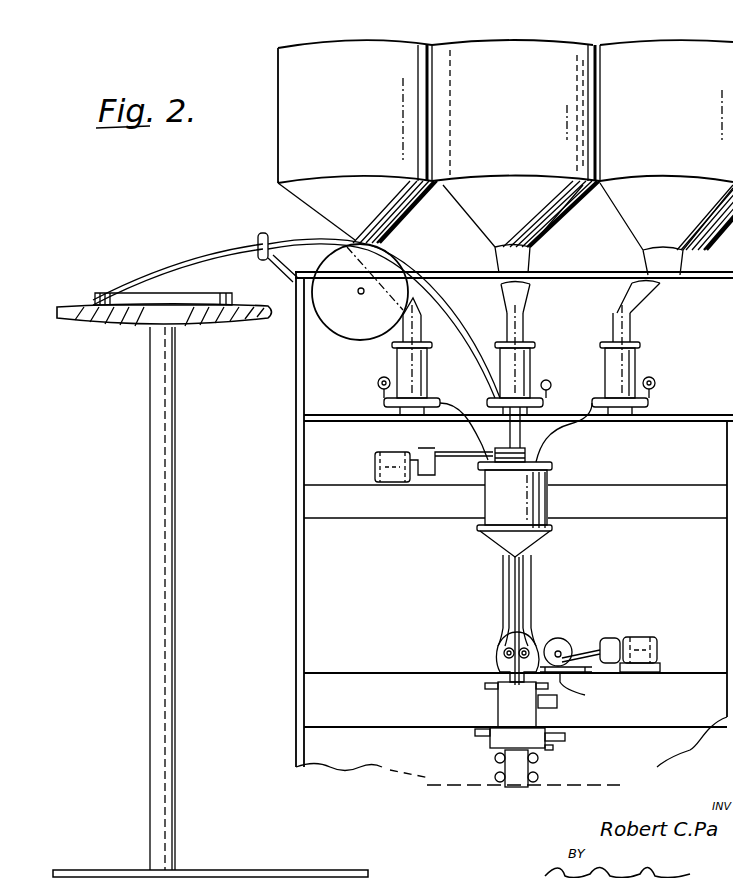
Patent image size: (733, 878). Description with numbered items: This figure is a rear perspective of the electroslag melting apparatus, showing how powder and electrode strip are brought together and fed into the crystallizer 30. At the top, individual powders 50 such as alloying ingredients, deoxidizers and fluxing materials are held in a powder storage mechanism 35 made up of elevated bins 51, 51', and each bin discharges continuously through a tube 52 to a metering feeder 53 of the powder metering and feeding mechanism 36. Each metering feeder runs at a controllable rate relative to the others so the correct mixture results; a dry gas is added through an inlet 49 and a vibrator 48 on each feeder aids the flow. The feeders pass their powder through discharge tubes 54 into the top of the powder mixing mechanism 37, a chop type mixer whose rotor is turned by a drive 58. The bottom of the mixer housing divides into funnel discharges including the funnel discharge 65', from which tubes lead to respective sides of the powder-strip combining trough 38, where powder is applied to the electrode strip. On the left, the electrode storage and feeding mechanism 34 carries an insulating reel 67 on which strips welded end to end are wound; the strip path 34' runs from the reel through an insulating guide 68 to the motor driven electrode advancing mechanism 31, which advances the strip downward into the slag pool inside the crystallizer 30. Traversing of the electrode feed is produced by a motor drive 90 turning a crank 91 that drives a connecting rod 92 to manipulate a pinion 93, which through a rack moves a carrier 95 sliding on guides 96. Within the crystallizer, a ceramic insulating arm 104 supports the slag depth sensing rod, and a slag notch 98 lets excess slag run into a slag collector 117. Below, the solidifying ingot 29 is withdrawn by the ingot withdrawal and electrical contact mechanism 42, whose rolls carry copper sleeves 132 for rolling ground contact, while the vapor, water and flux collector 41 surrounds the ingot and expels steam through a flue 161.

The bin 51 is at (364, 94).
The bin 51' is at (516, 96).
The powder storage mechanism 35 is at (592, 42).
The individual powders 50 is at (719, 50).
The insulating guide 68 is at (266, 234).
The feed tube 34' is at (296, 313).
The electrode storage and feeding mechanism 34 is at (210, 590).
The reel 67 is at (213, 312).
The metering feeder 53 is at (396, 357).
The inlet 49 is at (433, 363).
The vibrator 48 is at (379, 392).
The discharge tube 54 is at (441, 404).
The tube 52 is at (524, 331).
The powder metering and feeding mechanism 36 is at (645, 358).
The drive 58 is at (398, 482).
The powder mixing mechanism 37 is at (520, 508).
The funnel discharge 65' is at (532, 544).
The motor driven electrode advancing mechanism 31 is at (531, 628).
The powder-strip combining trough 38 is at (501, 668).
The crystallizer 30 is at (498, 705).
The ceramic insulating arm 104 is at (486, 685).
The slag notch 98 is at (548, 686).
The slag collector 117 is at (551, 708).
The vapor, water and flux collector 41 is at (489, 742).
The flue 161 is at (566, 741).
The ingot 29 is at (518, 785).
The ingot withdrawal and electrical contact mechanism 42 is at (540, 760).
The copper sleeve 132 is at (538, 781).
The motor drive 90 is at (643, 642).
The crank 91 is at (612, 640).
The connecting rod 92 is at (584, 654).
The pinion 93 is at (553, 644).
The carrier 95 is at (588, 673).
The guide 96 is at (585, 690).